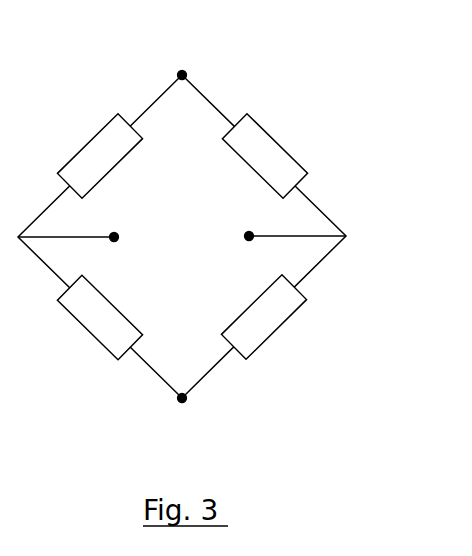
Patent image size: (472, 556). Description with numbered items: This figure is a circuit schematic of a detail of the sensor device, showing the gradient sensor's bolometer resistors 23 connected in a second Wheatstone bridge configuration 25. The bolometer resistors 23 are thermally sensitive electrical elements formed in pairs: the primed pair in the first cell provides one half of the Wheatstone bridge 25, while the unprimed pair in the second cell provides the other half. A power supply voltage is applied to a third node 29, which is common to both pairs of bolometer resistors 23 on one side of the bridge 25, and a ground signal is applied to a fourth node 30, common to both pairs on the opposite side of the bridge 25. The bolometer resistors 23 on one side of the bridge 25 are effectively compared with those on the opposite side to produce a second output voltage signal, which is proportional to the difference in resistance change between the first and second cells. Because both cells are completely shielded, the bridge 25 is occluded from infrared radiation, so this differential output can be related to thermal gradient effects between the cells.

The bolometer resistors 23 is at (72, 154).
The second Wheatstone bridge configuration 25 is at (268, 68).
The third node 29 is at (178, 74).
The fourth node 30 is at (189, 398).